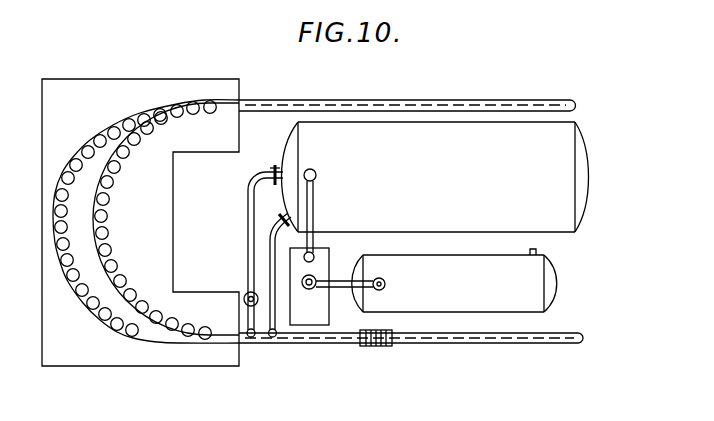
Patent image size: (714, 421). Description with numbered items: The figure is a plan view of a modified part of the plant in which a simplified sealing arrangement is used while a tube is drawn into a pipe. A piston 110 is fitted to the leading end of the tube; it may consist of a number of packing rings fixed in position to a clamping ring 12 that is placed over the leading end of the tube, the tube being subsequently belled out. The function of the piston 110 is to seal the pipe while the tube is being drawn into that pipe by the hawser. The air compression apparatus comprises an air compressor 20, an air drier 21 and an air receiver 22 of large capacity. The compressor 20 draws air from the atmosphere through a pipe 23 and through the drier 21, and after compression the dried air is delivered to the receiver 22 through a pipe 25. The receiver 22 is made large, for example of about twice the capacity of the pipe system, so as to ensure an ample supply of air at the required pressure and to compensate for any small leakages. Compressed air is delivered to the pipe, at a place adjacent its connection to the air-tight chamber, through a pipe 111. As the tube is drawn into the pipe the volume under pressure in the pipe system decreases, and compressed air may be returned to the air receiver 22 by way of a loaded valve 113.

The clamping ring 12 is at (272, 318).
The air compressor 20 is at (313, 317).
The air drier 21 is at (530, 286).
The air receiver 22 is at (390, 136).
The pipe 23 is at (535, 252).
The pipe 25 is at (313, 208).
The piston 110 is at (380, 347).
The pipe 111 is at (248, 252).
The loaded valve 113 is at (244, 299).